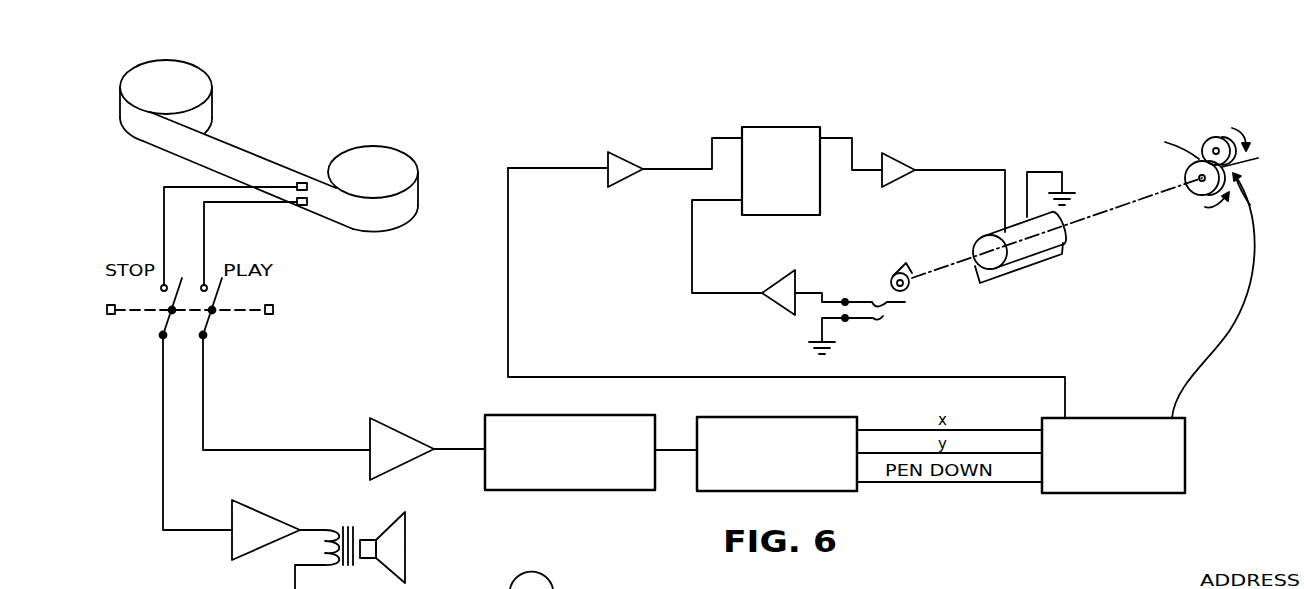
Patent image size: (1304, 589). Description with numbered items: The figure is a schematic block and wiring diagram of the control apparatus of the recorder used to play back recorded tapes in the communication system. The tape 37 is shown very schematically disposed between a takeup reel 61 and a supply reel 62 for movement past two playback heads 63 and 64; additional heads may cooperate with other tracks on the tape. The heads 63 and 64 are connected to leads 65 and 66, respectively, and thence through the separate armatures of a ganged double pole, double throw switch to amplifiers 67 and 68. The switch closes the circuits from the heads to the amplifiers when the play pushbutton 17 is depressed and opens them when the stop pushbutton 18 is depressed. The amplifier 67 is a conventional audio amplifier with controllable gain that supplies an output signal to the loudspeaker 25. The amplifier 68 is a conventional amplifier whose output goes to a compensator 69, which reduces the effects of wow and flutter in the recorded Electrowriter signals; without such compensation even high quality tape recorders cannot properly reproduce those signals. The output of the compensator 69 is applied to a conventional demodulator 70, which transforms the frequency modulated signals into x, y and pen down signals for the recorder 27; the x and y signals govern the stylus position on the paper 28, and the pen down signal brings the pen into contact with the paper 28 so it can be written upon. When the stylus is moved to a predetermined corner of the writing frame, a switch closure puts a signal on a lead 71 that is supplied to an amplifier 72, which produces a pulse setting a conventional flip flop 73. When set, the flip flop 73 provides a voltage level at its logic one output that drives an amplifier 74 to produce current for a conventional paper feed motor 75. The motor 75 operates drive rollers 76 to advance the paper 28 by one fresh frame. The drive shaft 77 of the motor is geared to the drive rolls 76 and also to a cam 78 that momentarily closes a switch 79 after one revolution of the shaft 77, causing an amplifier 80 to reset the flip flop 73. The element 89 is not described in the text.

The takeup reel 61 is at (182, 78).
The tape 37 is at (219, 156).
The supply reel 62 is at (374, 158).
The playback head 63 is at (308, 187).
The playback head 64 is at (307, 202).
The lead 65 is at (164, 228).
The lead 66 is at (205, 240).
The play pushbutton 17 is at (273, 310).
The stop pushbutton 18 is at (109, 316).
The audio amplifier 67 is at (268, 517).
The amplifier 68 is at (397, 430).
The loudspeaker 25 is at (348, 521).
The compensator 69 is at (557, 483).
The demodulator 70 is at (764, 483).
The lead 71 is at (993, 350).
The amplifier 72 is at (624, 158).
The flip flop 73 is at (772, 127).
The amplifier 74 is at (926, 140).
The paper feed motor 75 is at (990, 215).
The drive rollers 76 is at (1198, 133).
The drive shaft 77 is at (1142, 202).
The cam 78 is at (903, 242).
The switch 79 is at (862, 278).
The amplifier 80 is at (768, 296).
The recorder 27 is at (1185, 483).
The paper 28 is at (1258, 240).
The element 89 is at (563, 588).